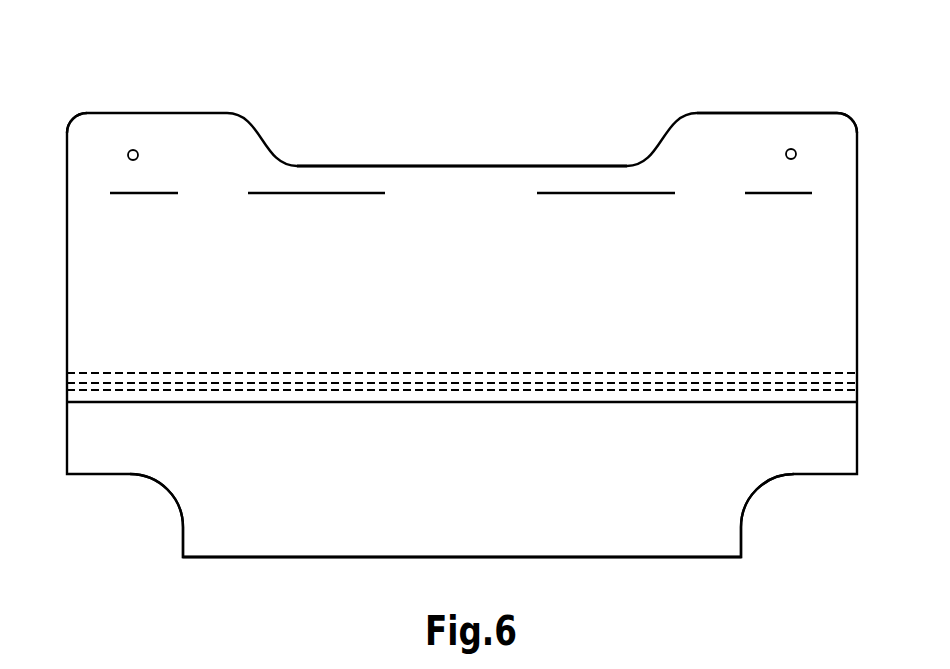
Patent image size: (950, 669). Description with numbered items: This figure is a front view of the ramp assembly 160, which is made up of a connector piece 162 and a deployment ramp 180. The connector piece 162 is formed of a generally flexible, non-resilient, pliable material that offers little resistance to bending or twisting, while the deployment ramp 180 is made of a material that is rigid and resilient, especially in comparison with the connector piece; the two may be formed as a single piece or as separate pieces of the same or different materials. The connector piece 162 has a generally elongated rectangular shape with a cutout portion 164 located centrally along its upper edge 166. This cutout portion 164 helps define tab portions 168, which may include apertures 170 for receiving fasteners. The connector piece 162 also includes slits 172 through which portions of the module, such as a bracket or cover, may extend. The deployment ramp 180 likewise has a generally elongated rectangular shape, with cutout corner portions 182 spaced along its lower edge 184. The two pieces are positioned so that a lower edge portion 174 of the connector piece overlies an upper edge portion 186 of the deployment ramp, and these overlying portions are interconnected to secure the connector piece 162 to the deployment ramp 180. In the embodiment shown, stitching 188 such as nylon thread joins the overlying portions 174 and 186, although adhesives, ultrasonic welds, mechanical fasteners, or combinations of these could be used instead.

The ramp assembly 160 is at (146, 88).
The connector piece 162 is at (462, 215).
The cutout portion 164 is at (410, 166).
The upper edge 166 is at (743, 113).
The tab portions 168 is at (103, 139).
The apertures 170 is at (137, 152).
The slits 172 is at (160, 193).
The lower edge portion 174 is at (445, 395).
The deployment ramp 180 is at (563, 490).
The cutout corner portions 182 is at (128, 474).
The lower edge 184 is at (328, 557).
The upper edge portion 186 is at (203, 378).
The stitching 188 is at (302, 387).